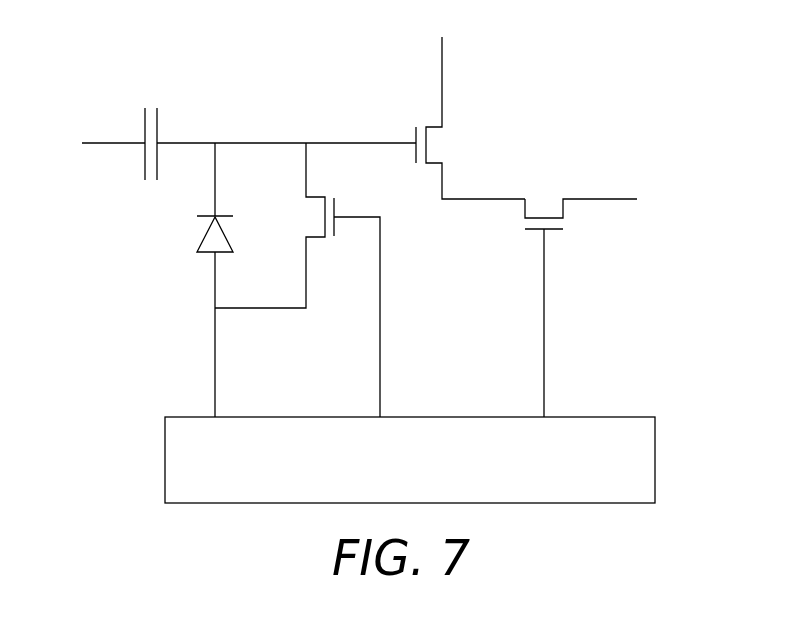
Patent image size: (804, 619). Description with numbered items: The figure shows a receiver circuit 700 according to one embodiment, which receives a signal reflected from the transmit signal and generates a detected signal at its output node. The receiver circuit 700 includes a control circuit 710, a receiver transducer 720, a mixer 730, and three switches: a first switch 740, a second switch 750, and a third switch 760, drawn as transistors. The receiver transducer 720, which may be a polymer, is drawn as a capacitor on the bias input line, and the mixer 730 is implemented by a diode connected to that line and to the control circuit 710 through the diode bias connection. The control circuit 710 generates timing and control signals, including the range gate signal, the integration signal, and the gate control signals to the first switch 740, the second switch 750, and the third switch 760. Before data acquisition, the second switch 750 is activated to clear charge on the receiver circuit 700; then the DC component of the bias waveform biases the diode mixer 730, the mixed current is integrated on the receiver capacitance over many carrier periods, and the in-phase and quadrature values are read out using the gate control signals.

The receiver circuit 700 is at (527, 80).
The control circuit 710 is at (598, 417).
The receiver transducer 720 is at (145, 128).
The mixer 730 is at (201, 239).
The switch M1 740 is at (413, 138).
The switch M2 750 is at (337, 213).
The switch M3 760 is at (558, 194).